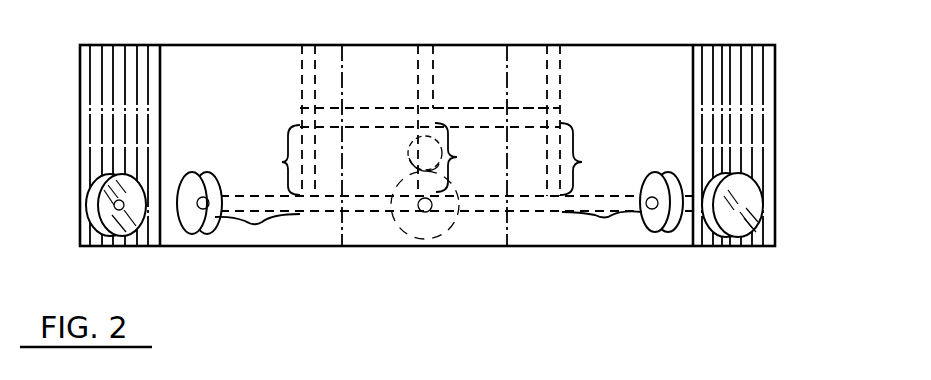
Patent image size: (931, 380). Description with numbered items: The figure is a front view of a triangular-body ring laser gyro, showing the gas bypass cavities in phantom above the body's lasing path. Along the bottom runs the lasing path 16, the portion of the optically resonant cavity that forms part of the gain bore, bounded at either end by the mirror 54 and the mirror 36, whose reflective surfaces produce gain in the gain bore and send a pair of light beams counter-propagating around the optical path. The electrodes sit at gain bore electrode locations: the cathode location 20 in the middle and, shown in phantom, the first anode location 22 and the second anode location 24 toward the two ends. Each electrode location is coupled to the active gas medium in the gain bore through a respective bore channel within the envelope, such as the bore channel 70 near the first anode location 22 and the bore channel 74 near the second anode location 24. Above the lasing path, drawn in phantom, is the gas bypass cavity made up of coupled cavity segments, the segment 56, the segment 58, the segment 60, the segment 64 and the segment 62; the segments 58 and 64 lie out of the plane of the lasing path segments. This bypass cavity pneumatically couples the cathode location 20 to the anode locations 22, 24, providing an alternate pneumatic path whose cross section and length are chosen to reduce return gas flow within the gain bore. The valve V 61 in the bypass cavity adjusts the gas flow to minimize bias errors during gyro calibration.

The lasing path 16 is at (313, 203).
The cathode location 20 is at (425, 212).
The anode 1 location 22 is at (217, 165).
The anode 2 location 24 is at (658, 168).
The mirror 36 is at (779, 184).
The mirror 54 is at (80, 193).
The gas bypass cavity segment 56 is at (282, 162).
The gas bypass cavity segment 58 is at (380, 112).
The gas bypass cavity segment 60 is at (458, 157).
The valve V 61 is at (410, 163).
The gas bypass cavity segment 62 is at (584, 159).
The gas bypass cavity segment 64 is at (468, 108).
The bore channel 70 is at (257, 228).
The bore channel 74 is at (602, 224).